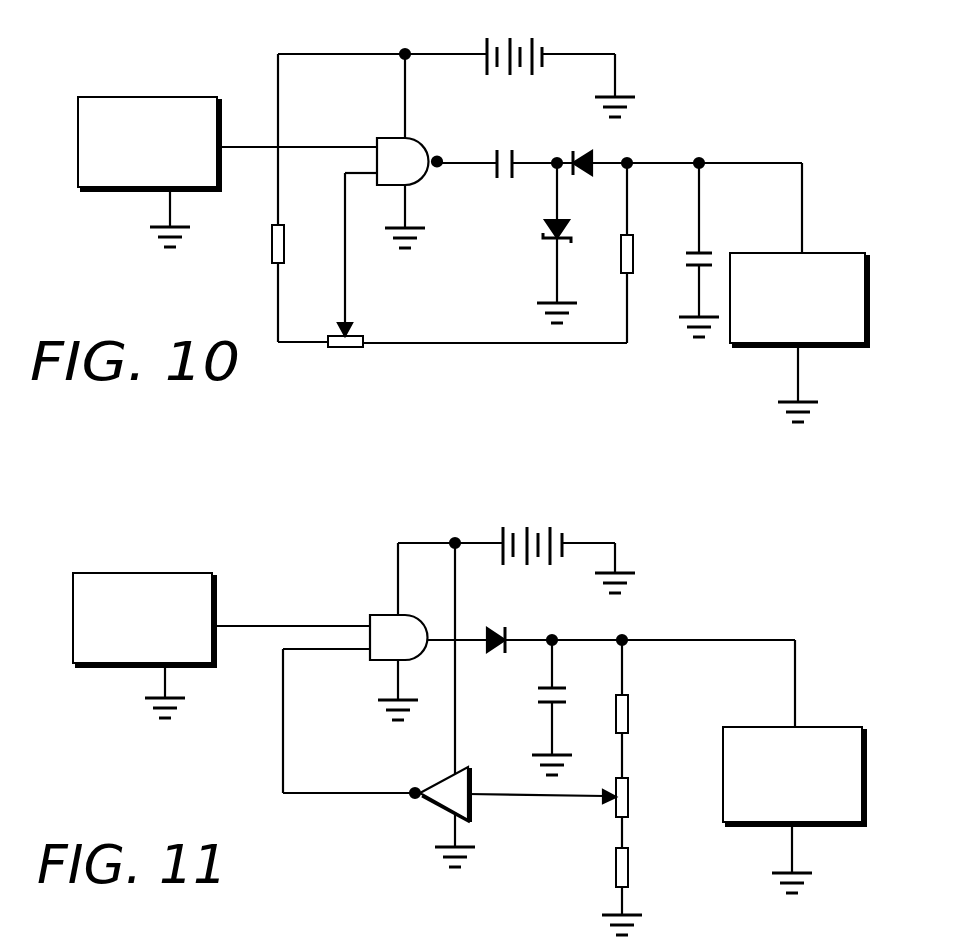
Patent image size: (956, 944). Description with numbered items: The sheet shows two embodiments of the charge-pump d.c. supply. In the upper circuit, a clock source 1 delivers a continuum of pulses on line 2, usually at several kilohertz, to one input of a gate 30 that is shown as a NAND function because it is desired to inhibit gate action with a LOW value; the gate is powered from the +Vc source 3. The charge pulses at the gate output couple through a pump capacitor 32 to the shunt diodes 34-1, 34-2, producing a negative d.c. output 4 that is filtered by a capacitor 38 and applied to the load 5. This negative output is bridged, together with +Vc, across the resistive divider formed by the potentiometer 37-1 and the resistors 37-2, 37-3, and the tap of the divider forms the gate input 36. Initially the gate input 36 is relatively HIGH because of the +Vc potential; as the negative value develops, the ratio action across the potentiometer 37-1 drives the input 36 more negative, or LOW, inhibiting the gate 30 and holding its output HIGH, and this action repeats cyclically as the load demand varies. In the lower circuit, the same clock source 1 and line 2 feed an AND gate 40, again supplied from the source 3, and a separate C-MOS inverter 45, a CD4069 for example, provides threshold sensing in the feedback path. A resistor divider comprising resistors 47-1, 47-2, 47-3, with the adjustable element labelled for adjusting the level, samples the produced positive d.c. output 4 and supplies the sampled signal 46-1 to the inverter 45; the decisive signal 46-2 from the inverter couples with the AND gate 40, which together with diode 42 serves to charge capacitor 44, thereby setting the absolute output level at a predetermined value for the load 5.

In FIG. 10, the clock source 1 is at (170, 110).
In FIG. 11, the clock source 1 is at (167, 592).
In FIG. 10, the clock line 2 is at (251, 146).
In FIG. 11, the clock line 2 is at (284, 624).
In FIG. 10, the source 3 is at (540, 46).
In FIG. 11, the source 3 is at (559, 533).
In FIG. 10, the D.C. output 4 is at (596, 160).
In FIG. 11, the D.C. output 4 is at (649, 639).
In FIG. 10, the load 5 is at (826, 274).
In FIG. 11, the load 5 is at (815, 748).
In FIG. 10, the NAND gate 30 is at (415, 144).
In FIG. 10, the pump capacitor 32 is at (497, 178).
In FIG. 10, the shunt diode 34-1 is at (545, 238).
In FIG. 10, the shunt diode 34-2 is at (575, 177).
In FIG. 10, the gate input 36 is at (345, 204).
In FIG. 10, the potentiometer 37-1 is at (337, 344).
In FIG. 10, the resistor 37-2 is at (272, 249).
In FIG. 10, the resistor 37-3 is at (634, 254).
In FIG. 10, the filter capacitor 38 is at (715, 256).
In FIG. 11, the AND gate 40 is at (382, 616).
In FIG. 11, the diode 42 is at (498, 632).
In FIG. 11, the capacitor 44 is at (542, 702).
In FIG. 11, the C-MOS inverter 45 is at (443, 791).
In FIG. 11, the inverter input signal 46-1 is at (585, 798).
In FIG. 11, the decisive signal 46-2 is at (297, 798).
In FIG. 11, the resistor 47-1 is at (628, 810).
In FIG. 11, the resistor 47-2 is at (628, 875).
In FIG. 11, the resistor 47-3 is at (627, 726).